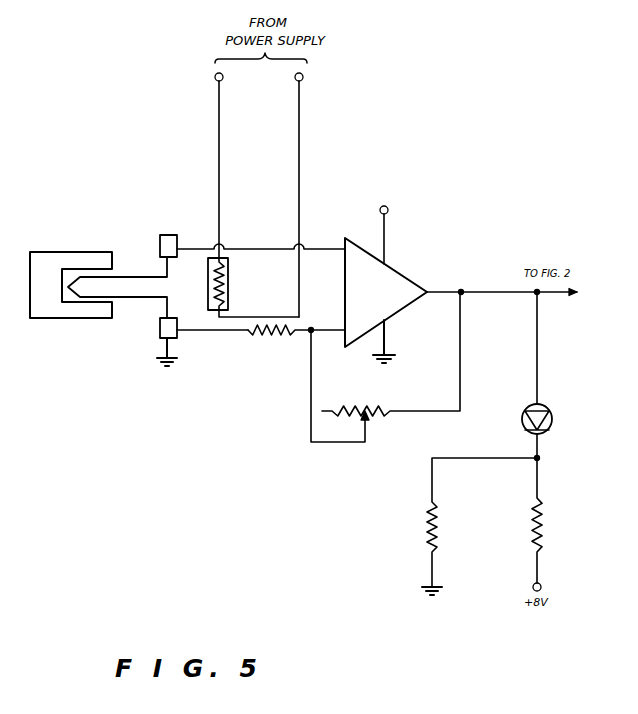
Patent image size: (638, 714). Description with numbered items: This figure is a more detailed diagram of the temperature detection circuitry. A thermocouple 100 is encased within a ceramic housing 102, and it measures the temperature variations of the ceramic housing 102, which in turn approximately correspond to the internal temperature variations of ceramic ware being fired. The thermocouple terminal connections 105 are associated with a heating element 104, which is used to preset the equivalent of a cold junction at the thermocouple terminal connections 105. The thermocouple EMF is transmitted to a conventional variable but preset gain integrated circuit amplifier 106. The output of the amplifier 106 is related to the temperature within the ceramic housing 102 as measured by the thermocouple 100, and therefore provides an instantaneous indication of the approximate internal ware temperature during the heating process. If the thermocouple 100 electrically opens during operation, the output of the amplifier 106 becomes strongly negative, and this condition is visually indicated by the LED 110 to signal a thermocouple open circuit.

The thermocouple 100 is at (117, 287).
The ceramic housing 102 is at (71, 285).
The heating element 104 is at (228, 300).
The thermocouple terminal connections 105 is at (180, 229).
The integrated circuit amplifier 106 is at (407, 279).
The LED 110 is at (548, 409).